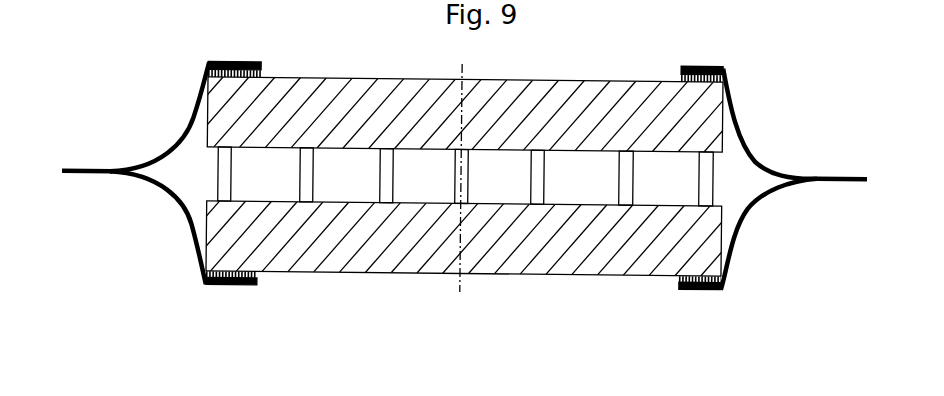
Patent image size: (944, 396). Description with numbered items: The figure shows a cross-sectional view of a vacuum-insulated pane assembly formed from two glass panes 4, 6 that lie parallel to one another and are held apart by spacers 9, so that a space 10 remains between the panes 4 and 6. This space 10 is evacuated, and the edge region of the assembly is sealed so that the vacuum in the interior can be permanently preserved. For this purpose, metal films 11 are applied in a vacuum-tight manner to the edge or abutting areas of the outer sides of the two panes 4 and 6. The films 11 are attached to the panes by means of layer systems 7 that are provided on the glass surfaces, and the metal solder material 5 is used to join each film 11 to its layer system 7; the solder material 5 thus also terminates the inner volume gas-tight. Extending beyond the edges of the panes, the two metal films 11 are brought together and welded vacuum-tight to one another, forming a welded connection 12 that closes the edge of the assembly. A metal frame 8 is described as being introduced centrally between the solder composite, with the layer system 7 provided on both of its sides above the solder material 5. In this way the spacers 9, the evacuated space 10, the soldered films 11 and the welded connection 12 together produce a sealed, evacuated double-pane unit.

The glass pane 4 is at (708, 101).
The metal solder material 5 is at (262, 64).
The glass pane 6 is at (709, 243).
The layer system 7 is at (266, 72).
The metal frame 8 is at (173, 213).
The spacer 9 is at (311, 155).
The space 10 is at (562, 156).
The metal film 11 is at (175, 138).
The welded connection 12 is at (78, 168).